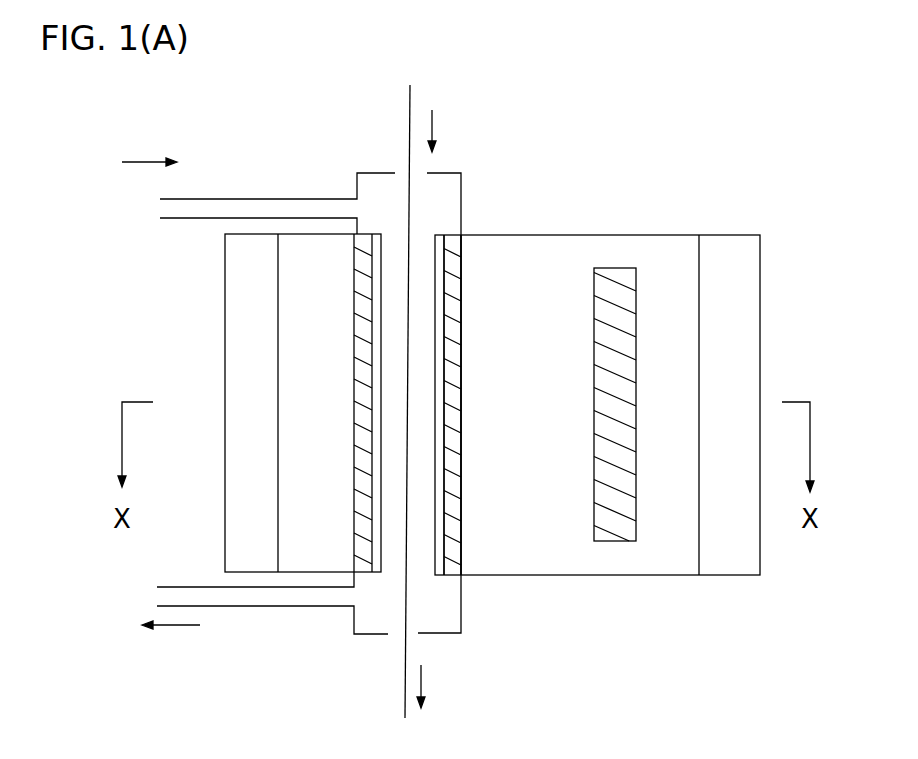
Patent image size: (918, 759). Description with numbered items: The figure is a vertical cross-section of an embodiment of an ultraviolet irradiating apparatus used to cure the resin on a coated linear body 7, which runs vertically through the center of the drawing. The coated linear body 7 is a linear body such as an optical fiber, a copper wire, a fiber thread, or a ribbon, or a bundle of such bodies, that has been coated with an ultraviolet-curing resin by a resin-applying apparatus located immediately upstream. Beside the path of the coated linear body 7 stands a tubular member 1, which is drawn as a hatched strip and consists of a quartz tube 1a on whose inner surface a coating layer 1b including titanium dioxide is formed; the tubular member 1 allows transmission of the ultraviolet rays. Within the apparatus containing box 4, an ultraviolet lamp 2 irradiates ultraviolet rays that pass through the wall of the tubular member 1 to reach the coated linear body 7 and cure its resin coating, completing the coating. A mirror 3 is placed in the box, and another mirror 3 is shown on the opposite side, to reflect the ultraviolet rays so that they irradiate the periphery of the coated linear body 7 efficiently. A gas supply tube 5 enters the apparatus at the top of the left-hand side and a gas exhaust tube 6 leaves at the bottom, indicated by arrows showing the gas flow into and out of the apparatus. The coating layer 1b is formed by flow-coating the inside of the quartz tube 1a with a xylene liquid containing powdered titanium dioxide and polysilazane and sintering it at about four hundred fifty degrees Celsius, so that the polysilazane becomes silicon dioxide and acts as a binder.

The tubular member 1 is at (577, 72).
The quartz tube 1a is at (461, 295).
The coating layer 1b is at (434, 310).
The ultraviolet lamp 2 is at (622, 263).
The mirror 3 is at (279, 297).
The apparatus containing box 4 is at (762, 327).
The gas supply tube 5 is at (307, 205).
The gas exhaust tube 6 is at (275, 598).
The coated linear body 7 is at (410, 110).